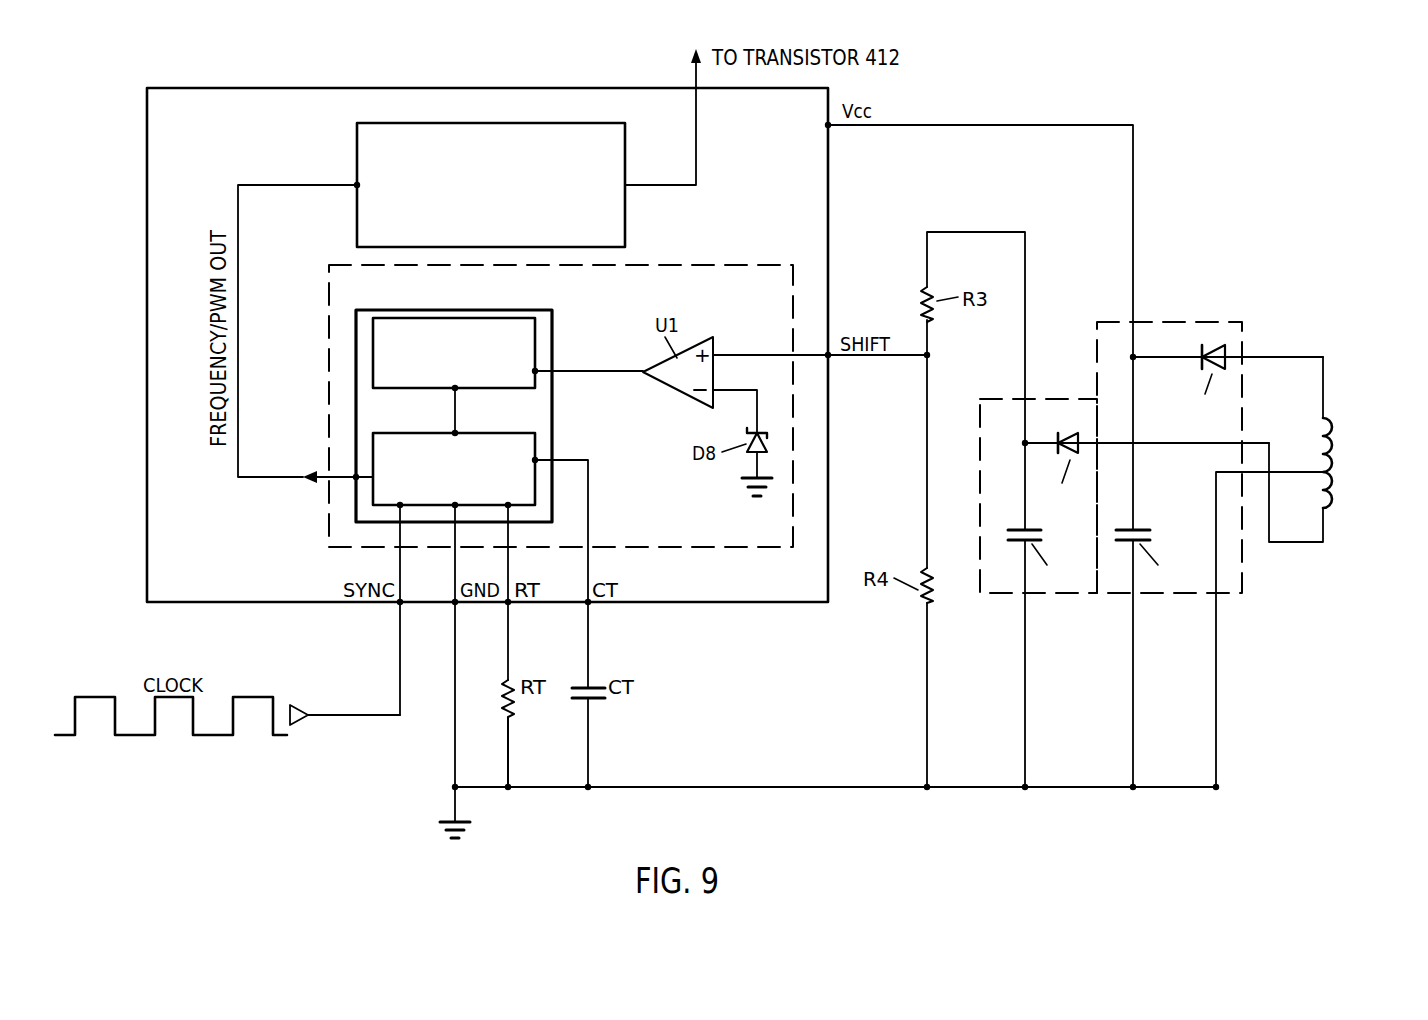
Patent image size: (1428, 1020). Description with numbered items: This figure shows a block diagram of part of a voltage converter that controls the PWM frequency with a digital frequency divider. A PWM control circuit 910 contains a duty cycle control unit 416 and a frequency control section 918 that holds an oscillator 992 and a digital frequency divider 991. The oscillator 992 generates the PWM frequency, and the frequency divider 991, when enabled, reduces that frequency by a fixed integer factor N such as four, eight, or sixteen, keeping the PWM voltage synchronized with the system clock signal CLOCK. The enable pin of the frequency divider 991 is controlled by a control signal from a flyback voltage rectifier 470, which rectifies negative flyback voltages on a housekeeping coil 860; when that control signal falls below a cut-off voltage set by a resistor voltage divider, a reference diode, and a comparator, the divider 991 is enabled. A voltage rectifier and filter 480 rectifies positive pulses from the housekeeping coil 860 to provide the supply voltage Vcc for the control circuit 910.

The PWM control circuit 910 is at (317, 87).
The duty cycle control unit 416 is at (405, 166).
The frequency control circuit 918 is at (765, 268).
The digital frequency divider 991 is at (530, 331).
The oscillator 992 is at (528, 443).
The flyback voltage rectifier 470 is at (1070, 594).
The voltage rectifier and filter 480 is at (1222, 322).
The housekeeping coil 860 is at (1344, 478).